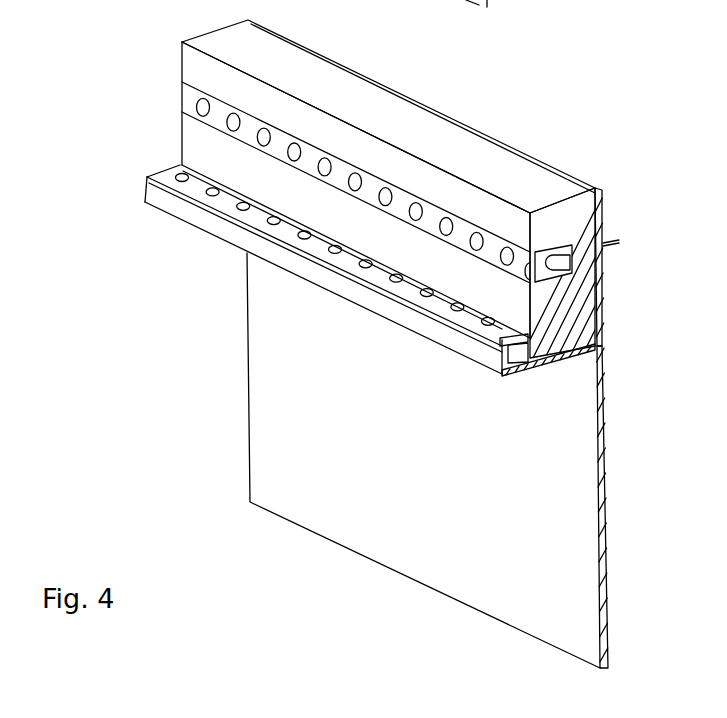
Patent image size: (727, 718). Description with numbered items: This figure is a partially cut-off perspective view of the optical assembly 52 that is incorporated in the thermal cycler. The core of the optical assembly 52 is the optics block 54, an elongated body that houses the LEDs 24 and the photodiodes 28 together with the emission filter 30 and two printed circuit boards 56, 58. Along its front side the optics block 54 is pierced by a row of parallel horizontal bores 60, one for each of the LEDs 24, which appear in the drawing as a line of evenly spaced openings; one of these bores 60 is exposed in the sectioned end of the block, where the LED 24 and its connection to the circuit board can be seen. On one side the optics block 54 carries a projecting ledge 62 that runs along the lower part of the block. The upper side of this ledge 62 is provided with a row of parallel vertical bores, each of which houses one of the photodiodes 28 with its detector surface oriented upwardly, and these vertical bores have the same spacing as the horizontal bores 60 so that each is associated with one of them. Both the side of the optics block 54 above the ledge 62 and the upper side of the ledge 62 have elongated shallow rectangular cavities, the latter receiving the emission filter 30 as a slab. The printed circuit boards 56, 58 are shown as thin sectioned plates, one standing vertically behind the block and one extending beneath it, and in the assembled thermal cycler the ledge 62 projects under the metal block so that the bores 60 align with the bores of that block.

The LED 24 is at (594, 188).
The photodiode 28 is at (517, 358).
The emission filter 30 is at (495, 340).
The optical assembly 52 is at (477, 110).
The optics block 54 is at (358, 110).
The printed circuit board 56 is at (603, 483).
The printed circuit board 58 is at (567, 352).
The horizontal bore 60 is at (583, 257).
The projecting ledge 62 is at (178, 210).